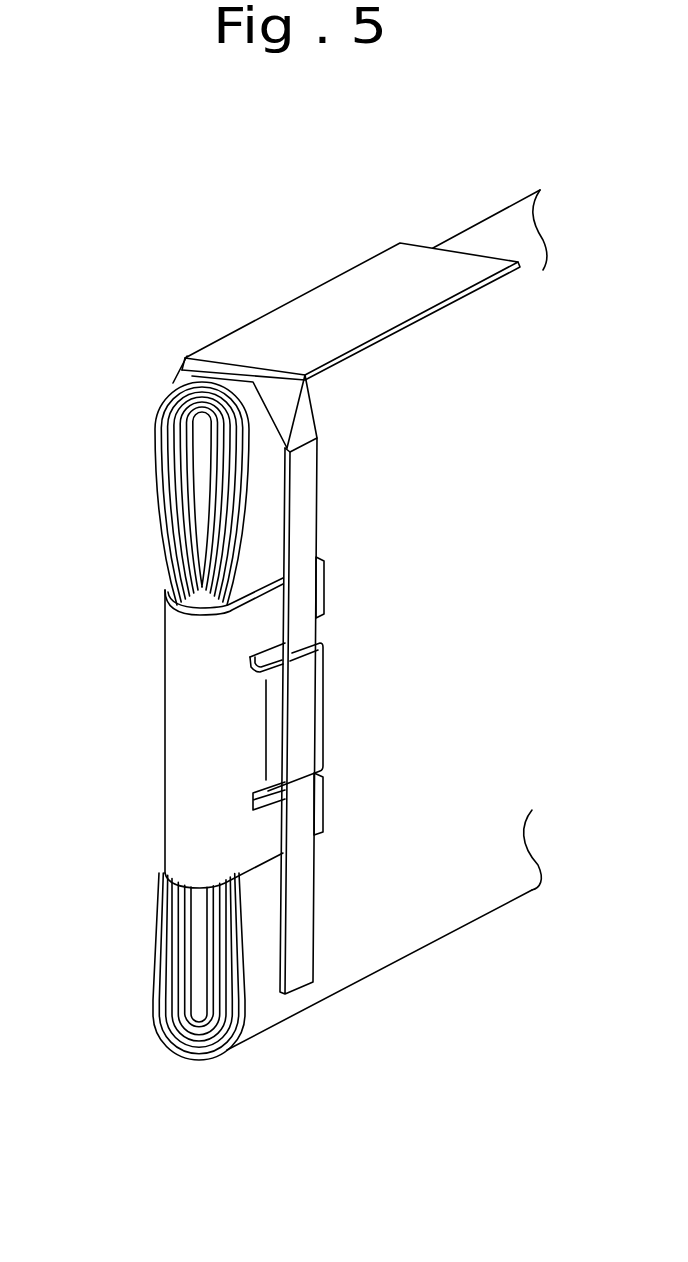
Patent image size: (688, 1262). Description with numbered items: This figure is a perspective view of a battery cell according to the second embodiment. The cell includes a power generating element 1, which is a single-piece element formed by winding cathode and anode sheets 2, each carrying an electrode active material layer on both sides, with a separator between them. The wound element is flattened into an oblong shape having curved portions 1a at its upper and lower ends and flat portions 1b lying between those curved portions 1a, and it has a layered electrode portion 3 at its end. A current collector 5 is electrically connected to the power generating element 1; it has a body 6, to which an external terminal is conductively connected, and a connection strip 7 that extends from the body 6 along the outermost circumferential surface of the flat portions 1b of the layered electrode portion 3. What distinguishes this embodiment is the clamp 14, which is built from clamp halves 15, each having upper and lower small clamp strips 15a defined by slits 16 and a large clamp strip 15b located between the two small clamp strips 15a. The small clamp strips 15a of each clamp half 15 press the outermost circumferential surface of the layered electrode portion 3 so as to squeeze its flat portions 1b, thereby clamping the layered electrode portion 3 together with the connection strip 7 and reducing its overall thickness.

The power generating element 1 is at (455, 943).
The curved portion 1a is at (208, 377).
The flat portion 1b is at (203, 502).
The cathode and anode sheet 2 is at (360, 952).
The layered electrode portion 3 is at (153, 970).
The current collector 5 is at (351, 578).
The body 6 is at (373, 283).
The connection strip 7 is at (303, 492).
The clamp 14 is at (251, 720).
The clamp half 15 is at (253, 720).
The small clamp strip 15a is at (327, 593).
The large clamp strip 15b is at (323, 737).
The slit 16 is at (323, 632).